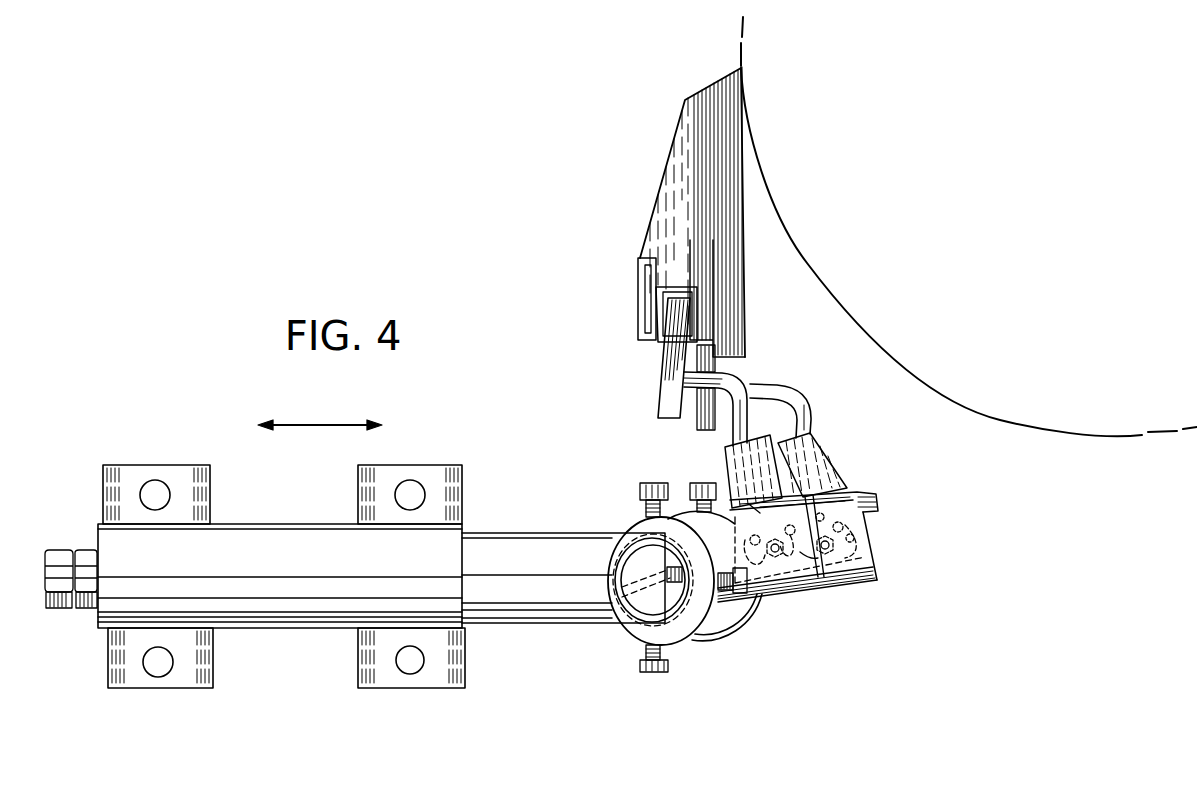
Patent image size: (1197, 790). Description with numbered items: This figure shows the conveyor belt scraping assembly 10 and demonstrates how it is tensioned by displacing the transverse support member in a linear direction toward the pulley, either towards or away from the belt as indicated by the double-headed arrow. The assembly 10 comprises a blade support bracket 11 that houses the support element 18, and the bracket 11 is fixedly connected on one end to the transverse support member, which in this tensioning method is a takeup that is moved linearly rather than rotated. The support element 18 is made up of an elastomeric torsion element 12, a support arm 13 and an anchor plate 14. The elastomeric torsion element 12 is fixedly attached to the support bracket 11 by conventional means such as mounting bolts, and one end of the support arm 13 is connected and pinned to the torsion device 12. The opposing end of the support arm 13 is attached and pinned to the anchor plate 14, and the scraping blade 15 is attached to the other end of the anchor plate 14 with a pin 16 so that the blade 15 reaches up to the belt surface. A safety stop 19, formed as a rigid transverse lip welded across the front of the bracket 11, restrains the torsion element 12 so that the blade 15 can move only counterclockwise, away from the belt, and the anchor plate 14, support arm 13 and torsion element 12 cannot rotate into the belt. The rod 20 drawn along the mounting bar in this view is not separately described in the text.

The conveyor belt scraping assembly 10 is at (769, 640).
The blade support bracket 11 is at (863, 575).
The elastomeric torsion element 12 is at (850, 549).
The support arm 13 is at (732, 384).
The anchor plate 14 is at (668, 370).
The scraping blade 15 is at (675, 137).
The pin 16 is at (637, 313).
The support element 18 is at (648, 434).
The safety stop 19 is at (868, 503).
The slide rod 20 is at (567, 613).